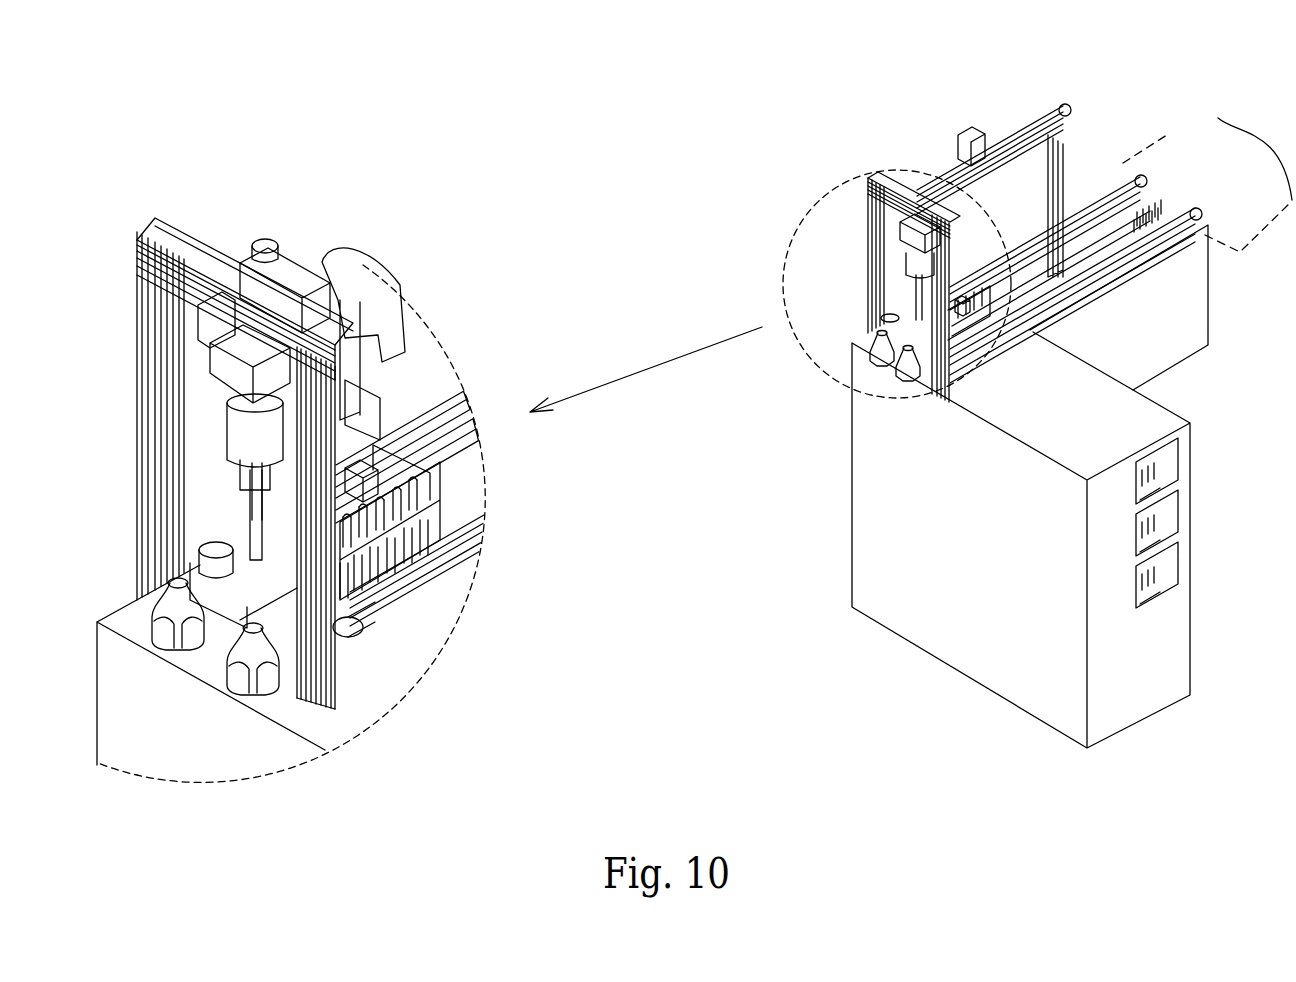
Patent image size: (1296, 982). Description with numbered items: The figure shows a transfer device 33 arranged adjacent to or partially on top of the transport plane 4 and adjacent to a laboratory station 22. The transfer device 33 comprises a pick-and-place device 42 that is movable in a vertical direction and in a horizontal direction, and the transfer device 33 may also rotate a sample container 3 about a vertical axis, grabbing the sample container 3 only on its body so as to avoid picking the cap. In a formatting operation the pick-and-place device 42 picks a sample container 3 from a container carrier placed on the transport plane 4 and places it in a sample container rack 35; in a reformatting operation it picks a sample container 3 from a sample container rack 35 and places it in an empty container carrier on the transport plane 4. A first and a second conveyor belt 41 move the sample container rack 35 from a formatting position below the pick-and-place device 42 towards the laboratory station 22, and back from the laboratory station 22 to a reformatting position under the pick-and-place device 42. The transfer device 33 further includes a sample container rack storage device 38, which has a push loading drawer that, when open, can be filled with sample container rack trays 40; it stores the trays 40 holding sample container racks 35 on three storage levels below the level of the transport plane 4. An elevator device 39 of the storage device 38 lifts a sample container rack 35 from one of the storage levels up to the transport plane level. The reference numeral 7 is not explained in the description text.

The sample container 3 is at (258, 512).
The transport plane 4 is at (313, 741).
The containers 7 is at (235, 690).
The laboratory station 22 is at (1205, 153).
The transfer device 33 is at (1157, 97).
The sample container rack 35 is at (433, 538).
The sample container rack storage device 38 is at (1180, 566).
The elevator device 39 is at (400, 512).
The sample container rack tray 40 is at (1140, 520).
The first and second conveyor belt 41 is at (446, 398).
The pick-and-place device 42 is at (240, 437).